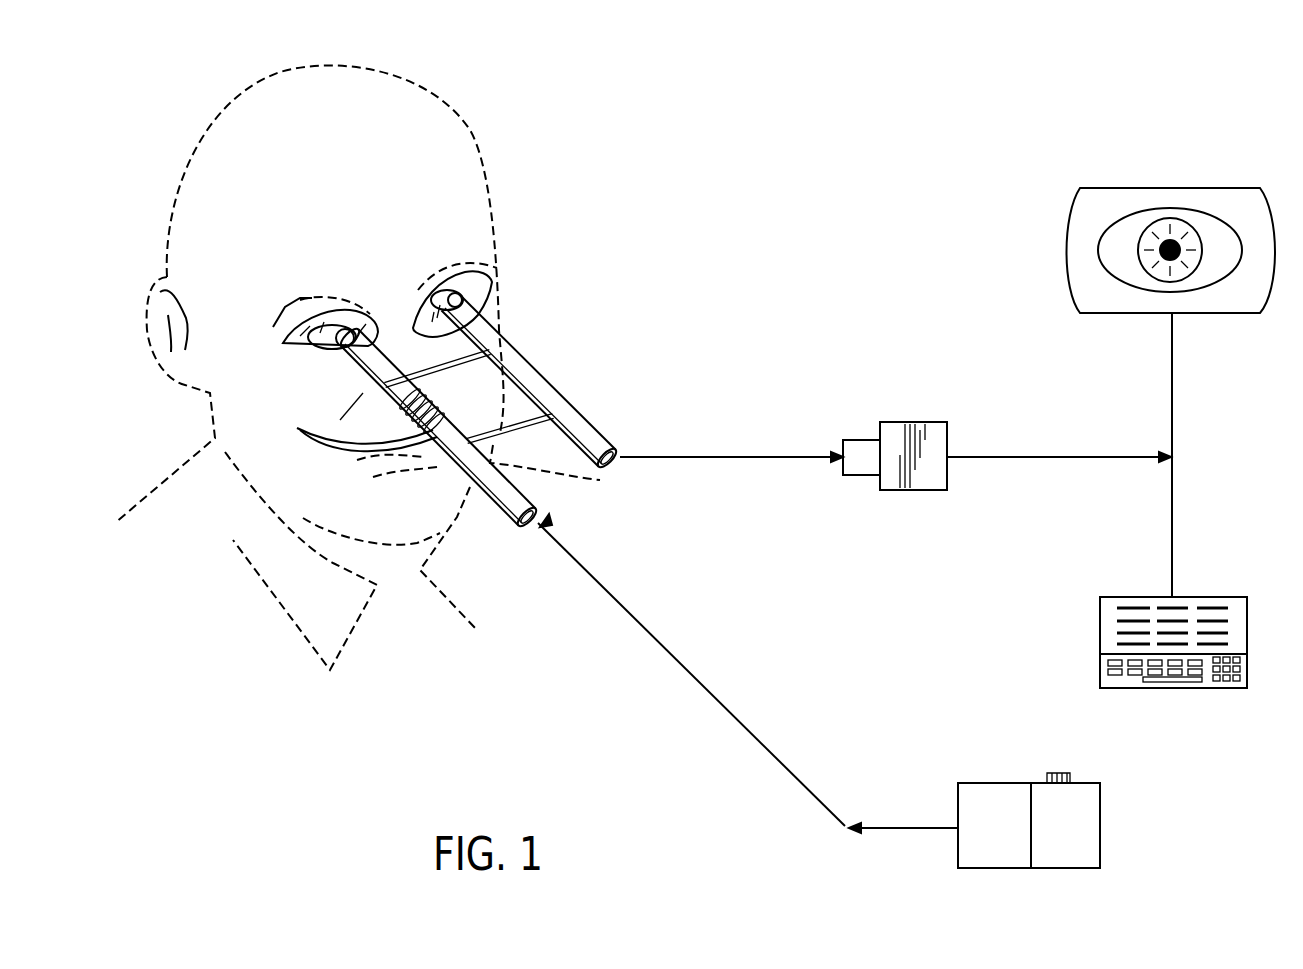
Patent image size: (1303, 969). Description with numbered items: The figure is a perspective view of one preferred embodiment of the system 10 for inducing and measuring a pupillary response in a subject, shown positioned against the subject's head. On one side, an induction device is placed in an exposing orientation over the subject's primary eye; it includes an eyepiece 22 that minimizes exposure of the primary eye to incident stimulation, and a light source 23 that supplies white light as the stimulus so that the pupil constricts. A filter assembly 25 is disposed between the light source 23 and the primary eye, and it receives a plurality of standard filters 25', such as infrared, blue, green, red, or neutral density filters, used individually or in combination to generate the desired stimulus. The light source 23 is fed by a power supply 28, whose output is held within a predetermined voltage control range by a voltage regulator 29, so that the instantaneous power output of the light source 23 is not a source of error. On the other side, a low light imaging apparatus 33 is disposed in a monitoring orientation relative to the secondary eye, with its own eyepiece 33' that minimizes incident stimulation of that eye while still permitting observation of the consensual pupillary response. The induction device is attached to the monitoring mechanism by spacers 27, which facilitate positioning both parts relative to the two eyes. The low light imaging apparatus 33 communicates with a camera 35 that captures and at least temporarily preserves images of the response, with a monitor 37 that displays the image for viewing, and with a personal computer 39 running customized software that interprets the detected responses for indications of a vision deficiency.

The system 10 is at (779, 188).
The eyepiece 22 is at (317, 323).
The light source 23 is at (467, 463).
The filter assembly 25 is at (344, 393).
The standard filters 25' is at (349, 430).
The spacers 27 is at (510, 413).
The power supply 28 is at (979, 836).
The voltage regulator 29 is at (1049, 836).
The low light imaging apparatus 33 is at (558, 382).
The eyepiece 33' is at (493, 250).
The camera 35 is at (918, 422).
The monitor 37 is at (1222, 188).
The personal computer 39 is at (1218, 597).